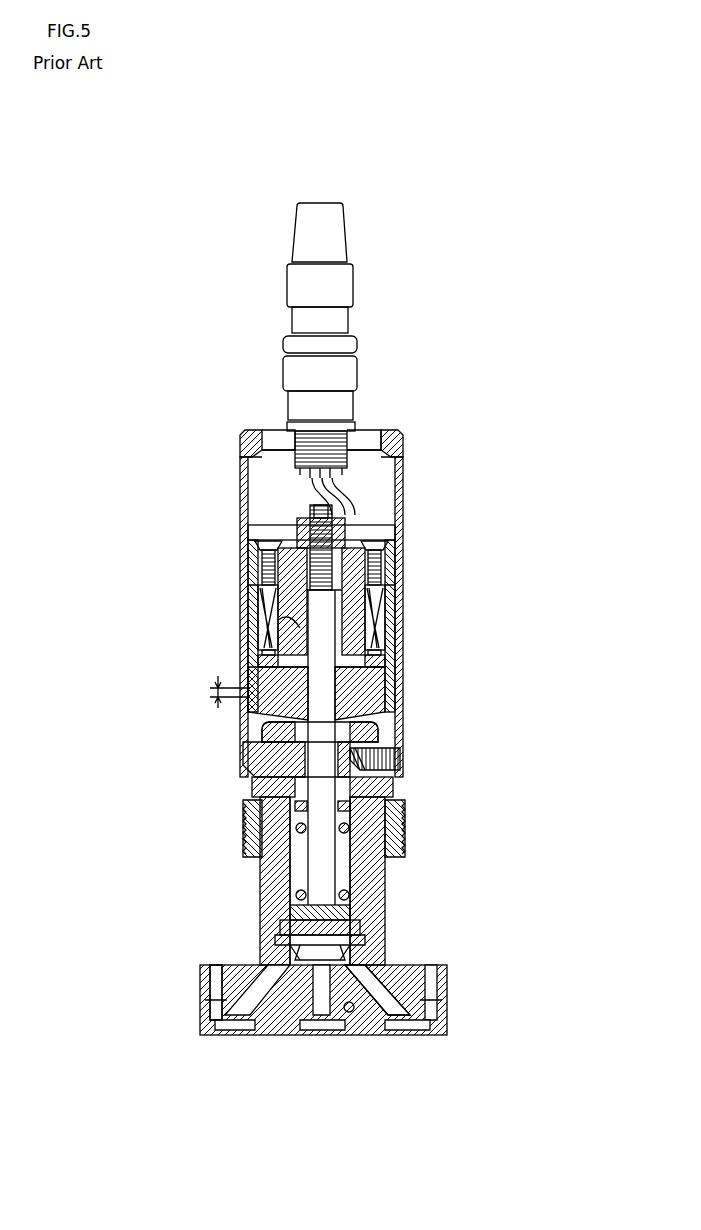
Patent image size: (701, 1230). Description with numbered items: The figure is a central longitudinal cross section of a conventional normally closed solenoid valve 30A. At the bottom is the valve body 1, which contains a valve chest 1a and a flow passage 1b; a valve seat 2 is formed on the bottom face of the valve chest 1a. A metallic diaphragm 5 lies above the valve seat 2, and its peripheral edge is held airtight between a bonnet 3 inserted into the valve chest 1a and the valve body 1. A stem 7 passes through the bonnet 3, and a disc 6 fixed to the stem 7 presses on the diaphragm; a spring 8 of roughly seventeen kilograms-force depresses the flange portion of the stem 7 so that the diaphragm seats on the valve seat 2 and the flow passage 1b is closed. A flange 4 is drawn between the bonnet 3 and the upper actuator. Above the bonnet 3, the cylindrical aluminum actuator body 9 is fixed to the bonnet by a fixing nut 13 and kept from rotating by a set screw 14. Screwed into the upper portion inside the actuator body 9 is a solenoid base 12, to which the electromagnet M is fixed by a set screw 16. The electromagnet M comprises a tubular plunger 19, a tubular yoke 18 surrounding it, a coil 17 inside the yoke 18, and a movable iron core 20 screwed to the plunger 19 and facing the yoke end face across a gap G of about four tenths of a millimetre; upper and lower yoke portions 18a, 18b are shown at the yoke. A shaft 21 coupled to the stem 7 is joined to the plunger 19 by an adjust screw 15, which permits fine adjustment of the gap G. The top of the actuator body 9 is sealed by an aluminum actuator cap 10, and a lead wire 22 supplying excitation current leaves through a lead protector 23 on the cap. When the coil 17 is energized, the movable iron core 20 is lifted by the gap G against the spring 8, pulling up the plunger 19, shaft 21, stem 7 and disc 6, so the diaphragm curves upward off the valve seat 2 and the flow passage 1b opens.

The solenoid valve 30A is at (194, 176).
The electromagnet M is at (485, 503).
The lead protector 23 is at (343, 374).
The actuator cap 10 is at (403, 443).
The lead wire 22 is at (360, 500).
The adjust screw 15 is at (290, 522).
The solenoid base 12 is at (400, 548).
The set screw 16 is at (262, 578).
The coil 17 is at (395, 618).
The yoke 18 is at (398, 655).
The yoke upper portion 18a is at (403, 603).
The yoke lower portion 18b is at (290, 628).
The shaft 21 is at (262, 660).
The plunger 19 is at (398, 672).
The movable iron core 20 is at (398, 698).
The gap G is at (215, 699).
The fixing nut 13 is at (243, 745).
The actuator body 9 is at (400, 738).
The set screw 14 is at (400, 760).
The valve body flange 4 is at (395, 790).
The bonnet 3 is at (400, 820).
The spring 8 is at (265, 830).
The stem 7 is at (270, 880).
The disc 6 is at (290, 912).
The metallic diaphragm 5 is at (283, 930).
The valve seat 2 is at (260, 962).
The valve body 1 is at (447, 996).
The valve chest 1a is at (368, 962).
The flow passage 1b is at (216, 1000).